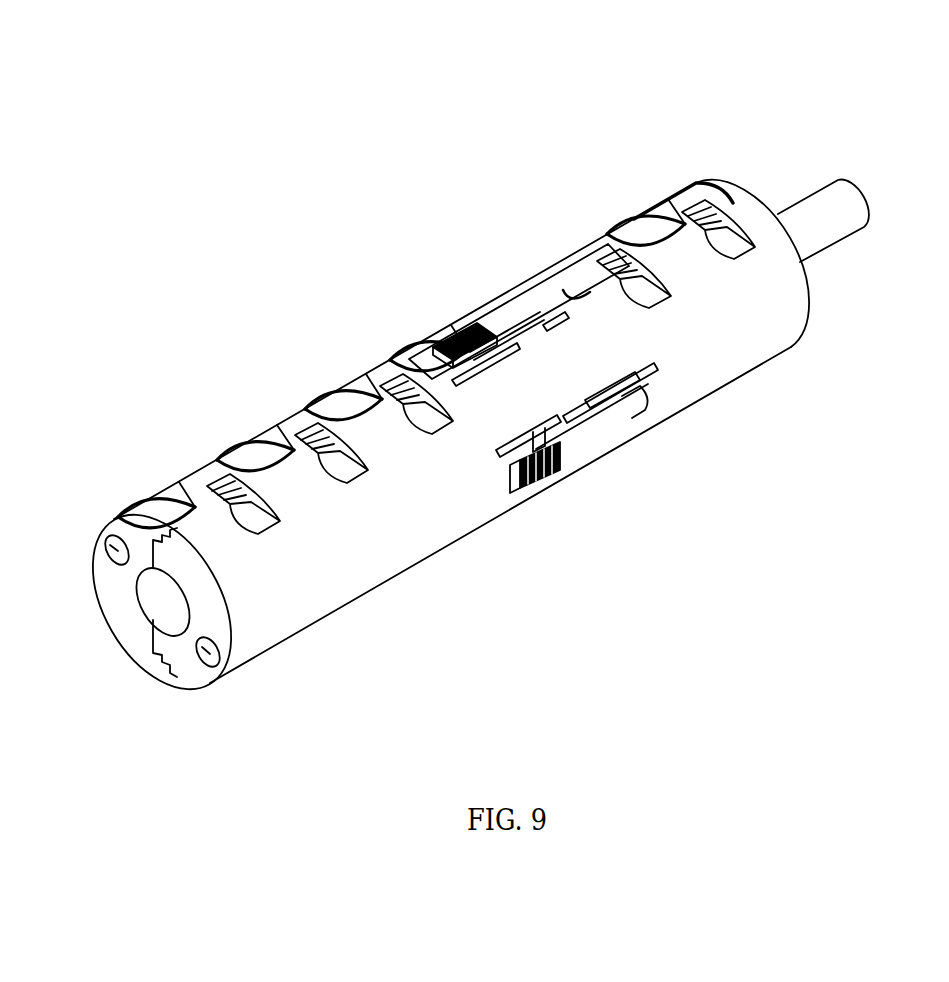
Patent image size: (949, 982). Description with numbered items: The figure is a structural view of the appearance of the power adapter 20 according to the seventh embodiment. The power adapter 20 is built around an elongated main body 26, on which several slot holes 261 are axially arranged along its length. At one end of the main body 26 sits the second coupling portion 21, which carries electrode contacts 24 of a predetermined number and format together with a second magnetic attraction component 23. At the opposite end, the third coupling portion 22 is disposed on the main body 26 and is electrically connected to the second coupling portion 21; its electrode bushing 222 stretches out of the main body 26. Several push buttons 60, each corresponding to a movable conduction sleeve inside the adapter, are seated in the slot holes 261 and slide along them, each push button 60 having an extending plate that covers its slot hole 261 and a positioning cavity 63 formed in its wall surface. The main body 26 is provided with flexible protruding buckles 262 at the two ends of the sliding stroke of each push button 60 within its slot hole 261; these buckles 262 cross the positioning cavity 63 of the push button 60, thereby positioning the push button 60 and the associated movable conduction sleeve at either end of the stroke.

The power adapter 20 is at (255, 667).
The second coupling portion 21 is at (137, 632).
The third coupling portion 22 is at (751, 192).
The electrode bushing 222 is at (838, 228).
The second magnetic attraction component 23 is at (116, 546).
The electrode contacts 24 is at (138, 595).
The main body 26 is at (333, 585).
The slot holes 261 is at (560, 290).
The flexible protruding buckles 262 is at (478, 357).
The push buttons 60 is at (460, 337).
The positioning cavity 63 is at (533, 452).